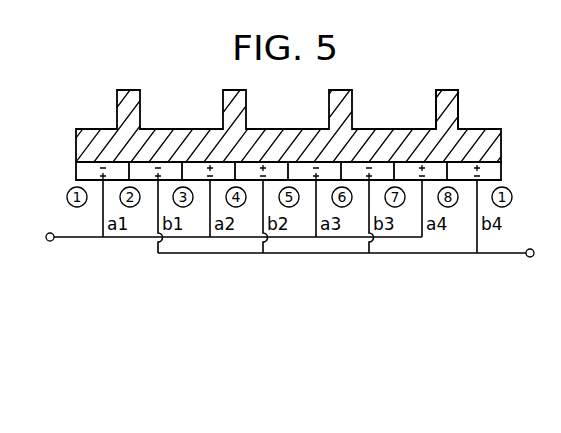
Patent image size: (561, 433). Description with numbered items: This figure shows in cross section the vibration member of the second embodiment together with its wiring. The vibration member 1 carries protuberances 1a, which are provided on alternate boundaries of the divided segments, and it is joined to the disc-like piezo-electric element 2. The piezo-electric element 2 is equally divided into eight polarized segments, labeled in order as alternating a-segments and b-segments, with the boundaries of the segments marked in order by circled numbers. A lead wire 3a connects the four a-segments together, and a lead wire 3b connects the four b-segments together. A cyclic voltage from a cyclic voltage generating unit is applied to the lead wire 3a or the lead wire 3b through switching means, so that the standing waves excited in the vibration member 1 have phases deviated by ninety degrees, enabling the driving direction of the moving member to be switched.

The vibration member 1 is at (492, 157).
The protuberances 1a is at (450, 115).
The piezo-electric element 2 is at (498, 178).
The lead wire 3a is at (51, 241).
The lead wire 3b is at (526, 256).